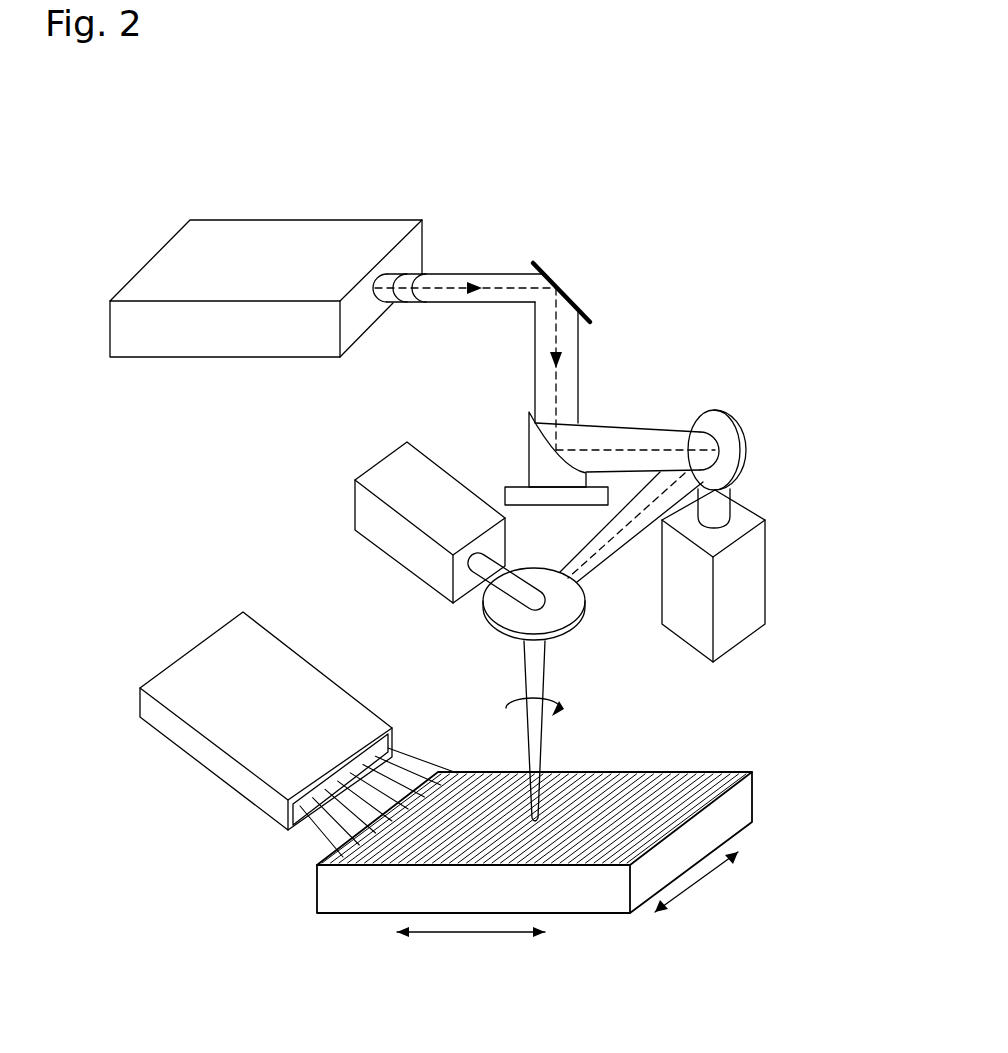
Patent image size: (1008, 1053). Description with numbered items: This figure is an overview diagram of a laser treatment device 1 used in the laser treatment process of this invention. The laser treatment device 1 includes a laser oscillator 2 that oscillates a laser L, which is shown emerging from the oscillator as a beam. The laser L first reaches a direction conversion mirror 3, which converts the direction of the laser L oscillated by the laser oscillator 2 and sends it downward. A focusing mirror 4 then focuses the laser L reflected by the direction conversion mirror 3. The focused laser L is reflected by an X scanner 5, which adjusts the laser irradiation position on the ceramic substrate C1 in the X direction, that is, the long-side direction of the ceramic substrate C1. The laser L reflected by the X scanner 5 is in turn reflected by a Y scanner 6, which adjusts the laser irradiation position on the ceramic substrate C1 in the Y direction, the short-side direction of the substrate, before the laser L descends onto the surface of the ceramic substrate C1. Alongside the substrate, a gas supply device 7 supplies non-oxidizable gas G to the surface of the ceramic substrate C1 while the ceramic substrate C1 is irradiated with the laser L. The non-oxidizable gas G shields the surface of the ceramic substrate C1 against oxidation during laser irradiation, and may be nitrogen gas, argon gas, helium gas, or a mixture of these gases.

The laser treatment device 1 is at (636, 231).
The laser oscillator 2 is at (281, 220).
The direction conversion mirror 3 is at (558, 293).
The focusing mirror 4 is at (527, 465).
The X scanner 5 is at (766, 577).
The Y scanner 6 is at (397, 565).
The gas supply device 7 is at (205, 768).
The laser L is at (488, 305).
The non-oxidizable gas G is at (377, 804).
The ceramic substrate C1 is at (358, 931).